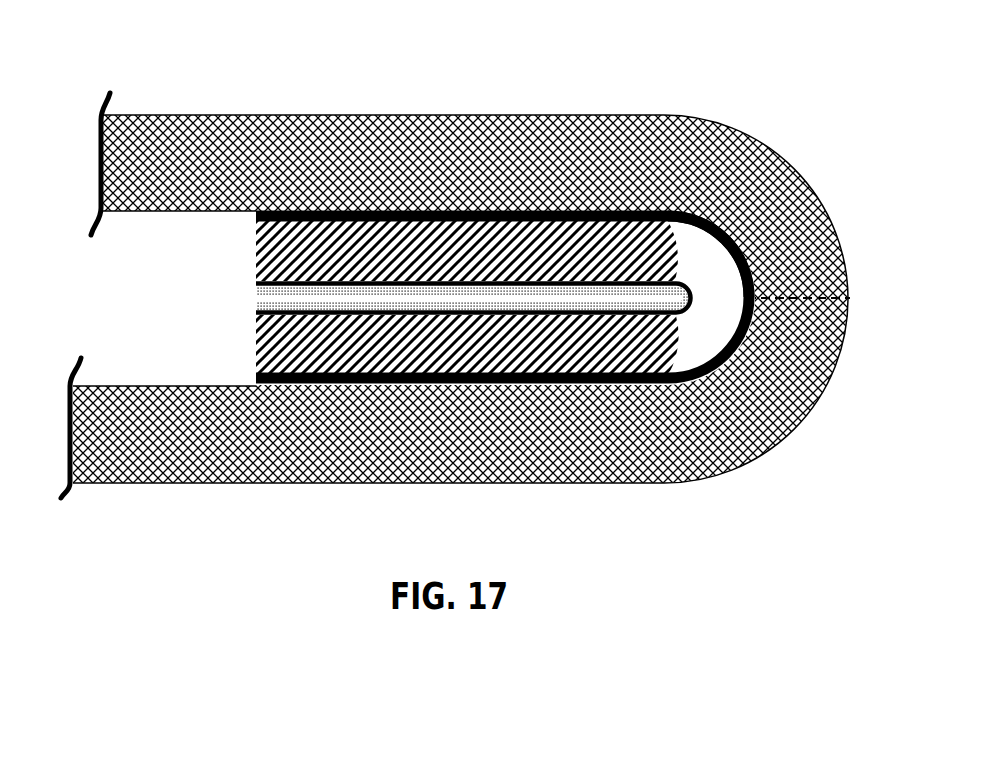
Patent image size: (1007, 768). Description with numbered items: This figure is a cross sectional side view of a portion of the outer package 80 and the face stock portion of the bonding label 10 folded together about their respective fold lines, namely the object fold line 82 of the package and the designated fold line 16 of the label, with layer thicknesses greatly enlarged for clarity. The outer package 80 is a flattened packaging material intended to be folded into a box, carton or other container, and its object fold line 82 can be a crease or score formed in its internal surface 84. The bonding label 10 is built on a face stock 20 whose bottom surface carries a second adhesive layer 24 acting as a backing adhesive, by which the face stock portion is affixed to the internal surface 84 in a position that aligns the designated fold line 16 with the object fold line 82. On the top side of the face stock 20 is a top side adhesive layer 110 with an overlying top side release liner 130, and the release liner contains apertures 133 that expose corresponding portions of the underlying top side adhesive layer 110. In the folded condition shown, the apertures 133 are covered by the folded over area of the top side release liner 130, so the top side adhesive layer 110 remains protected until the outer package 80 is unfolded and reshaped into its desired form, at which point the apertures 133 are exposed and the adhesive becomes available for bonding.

The bonding label 10 is at (466, 223).
The designated fold line 16 is at (725, 228).
The face stock 20 is at (248, 243).
The second adhesive layer 24 is at (248, 372).
The outer package 80 is at (620, 107).
The object fold line 82 is at (806, 290).
The internal surface 84 is at (101, 378).
The top side adhesive layer 110 is at (248, 280).
The top side release liner 130 is at (248, 297).
The apertures 133 is at (455, 325).